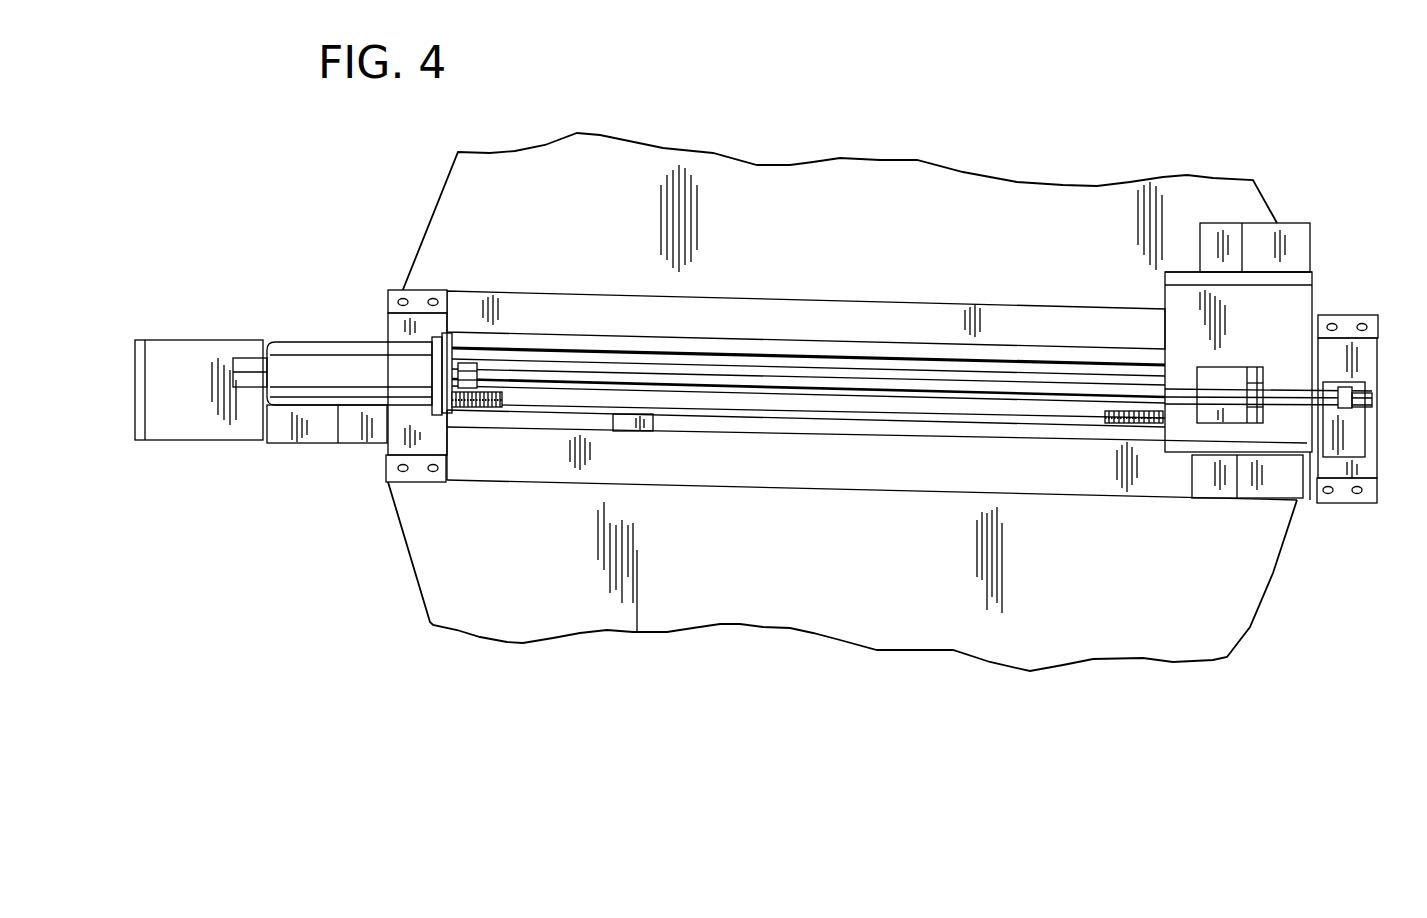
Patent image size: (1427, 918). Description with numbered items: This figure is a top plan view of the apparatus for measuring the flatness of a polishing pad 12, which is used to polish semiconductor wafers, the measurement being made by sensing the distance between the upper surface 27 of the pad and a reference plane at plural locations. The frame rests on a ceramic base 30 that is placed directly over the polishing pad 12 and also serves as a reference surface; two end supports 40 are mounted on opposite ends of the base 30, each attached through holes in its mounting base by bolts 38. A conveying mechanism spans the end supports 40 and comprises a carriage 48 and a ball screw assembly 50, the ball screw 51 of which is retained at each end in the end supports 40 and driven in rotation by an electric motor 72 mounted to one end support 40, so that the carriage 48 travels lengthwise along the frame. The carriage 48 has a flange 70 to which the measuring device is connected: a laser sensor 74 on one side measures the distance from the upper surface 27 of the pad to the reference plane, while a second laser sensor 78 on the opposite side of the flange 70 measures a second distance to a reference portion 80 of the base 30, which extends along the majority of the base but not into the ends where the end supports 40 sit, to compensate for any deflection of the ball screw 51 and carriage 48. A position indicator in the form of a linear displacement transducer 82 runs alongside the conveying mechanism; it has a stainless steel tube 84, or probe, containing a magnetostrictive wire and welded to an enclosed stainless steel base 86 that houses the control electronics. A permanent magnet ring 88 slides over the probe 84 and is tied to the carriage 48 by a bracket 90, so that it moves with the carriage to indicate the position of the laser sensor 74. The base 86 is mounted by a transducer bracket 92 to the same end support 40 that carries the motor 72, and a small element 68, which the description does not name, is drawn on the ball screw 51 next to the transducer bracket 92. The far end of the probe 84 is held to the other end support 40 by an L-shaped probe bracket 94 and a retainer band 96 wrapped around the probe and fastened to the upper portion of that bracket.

The polishing pad 12 is at (660, 160).
The upper surface of the polishing pad 27 is at (838, 170).
The ceramic base 30 is at (878, 308).
The bolts 38 is at (433, 297).
The end support 40 is at (390, 447).
The carriage 48 is at (1180, 330).
The ball screw assembly 50 is at (617, 414).
The ball screw 51 is at (985, 415).
The nut 68 is at (490, 405).
The flange 70 is at (1172, 292).
The electric motor 72 is at (192, 432).
The laser sensor 74 is at (1298, 238).
The second laser sensor 78 is at (1210, 487).
The reference portion 80 is at (800, 480).
The linear displacement transducer 82 is at (335, 345).
The stainless steel tube 84 is at (745, 382).
The stainless steel base 86 is at (290, 388).
The permanent magnet ring 88 is at (1283, 338).
The bracket 90 is at (1235, 425).
The transducer bracket 92 is at (452, 340).
The probe bracket 94 is at (1353, 430).
The retainer band 96 is at (1345, 388).